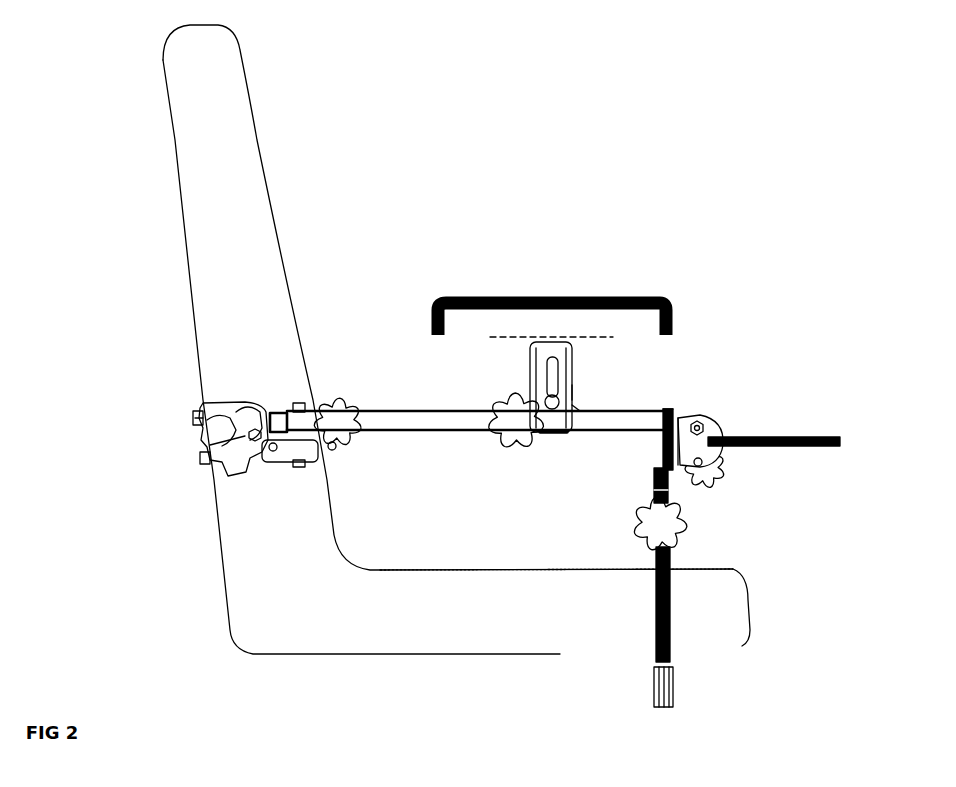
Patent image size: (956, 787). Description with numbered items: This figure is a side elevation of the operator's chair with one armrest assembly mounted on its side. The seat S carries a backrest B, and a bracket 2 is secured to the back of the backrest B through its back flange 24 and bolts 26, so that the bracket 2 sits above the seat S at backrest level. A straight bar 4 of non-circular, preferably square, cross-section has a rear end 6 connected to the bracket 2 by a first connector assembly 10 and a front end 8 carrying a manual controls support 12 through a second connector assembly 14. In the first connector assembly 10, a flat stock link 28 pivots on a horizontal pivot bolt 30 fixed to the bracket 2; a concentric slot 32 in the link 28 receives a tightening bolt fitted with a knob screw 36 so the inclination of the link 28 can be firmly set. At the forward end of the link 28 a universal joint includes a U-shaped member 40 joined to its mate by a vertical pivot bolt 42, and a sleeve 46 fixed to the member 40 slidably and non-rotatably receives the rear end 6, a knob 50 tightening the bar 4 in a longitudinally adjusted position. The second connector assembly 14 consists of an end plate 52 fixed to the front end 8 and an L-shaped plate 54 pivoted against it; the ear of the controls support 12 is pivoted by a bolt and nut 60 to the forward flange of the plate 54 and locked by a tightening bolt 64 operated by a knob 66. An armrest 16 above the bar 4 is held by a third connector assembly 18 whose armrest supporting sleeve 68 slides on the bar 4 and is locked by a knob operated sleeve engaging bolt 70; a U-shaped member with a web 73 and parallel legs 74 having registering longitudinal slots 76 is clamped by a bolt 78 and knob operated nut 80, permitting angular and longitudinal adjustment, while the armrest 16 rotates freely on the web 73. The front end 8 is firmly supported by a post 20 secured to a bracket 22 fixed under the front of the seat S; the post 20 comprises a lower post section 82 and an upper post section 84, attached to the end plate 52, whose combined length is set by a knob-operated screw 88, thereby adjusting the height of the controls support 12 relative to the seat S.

The backrest B is at (245, 167).
The seat S is at (493, 627).
The bracket 2 is at (203, 400).
The straight bar 4 is at (447, 423).
The rear end 6 is at (270, 457).
The front end 8 is at (645, 411).
The first connector assembly 10 is at (271, 470).
The manual controls support 12 is at (857, 458).
The second connector assembly 14 is at (710, 413).
The armrest 16 is at (662, 313).
The third connector assembly 18 is at (558, 435).
The post 20 is at (650, 485).
The bracket 22 is at (673, 688).
The back flange 24 is at (200, 402).
The bolts 26 is at (195, 418).
The flat stock link 28 is at (258, 407).
The horizontal pivot bolt 30 is at (250, 433).
The concentric slot 32 is at (249, 442).
The knob screw 36 is at (210, 455).
The U-shaped member 40 is at (340, 448).
The vertical pivot bolt 42 is at (302, 408).
The sleeve 46 is at (314, 435).
The knob 50 is at (345, 402).
The end plate 52 is at (670, 414).
The L-shaped plate 54 is at (682, 416).
The bolt and nut 60 is at (722, 420).
The tightening bolt 64 is at (710, 462).
The knob 66 is at (685, 482).
The armrest supporting sleeve 68 is at (577, 407).
The knob operated sleeve engaging bolt 70 is at (505, 440).
The web 73 is at (535, 342).
The elongated legs 74 is at (535, 357).
The longitudinal slots 76 is at (558, 368).
The bolt 78 is at (545, 396).
The knob operated nut 80 is at (576, 392).
The lower post section 82 is at (671, 607).
The upper post section 84 is at (652, 493).
The knob-operated screw 88 is at (690, 530).